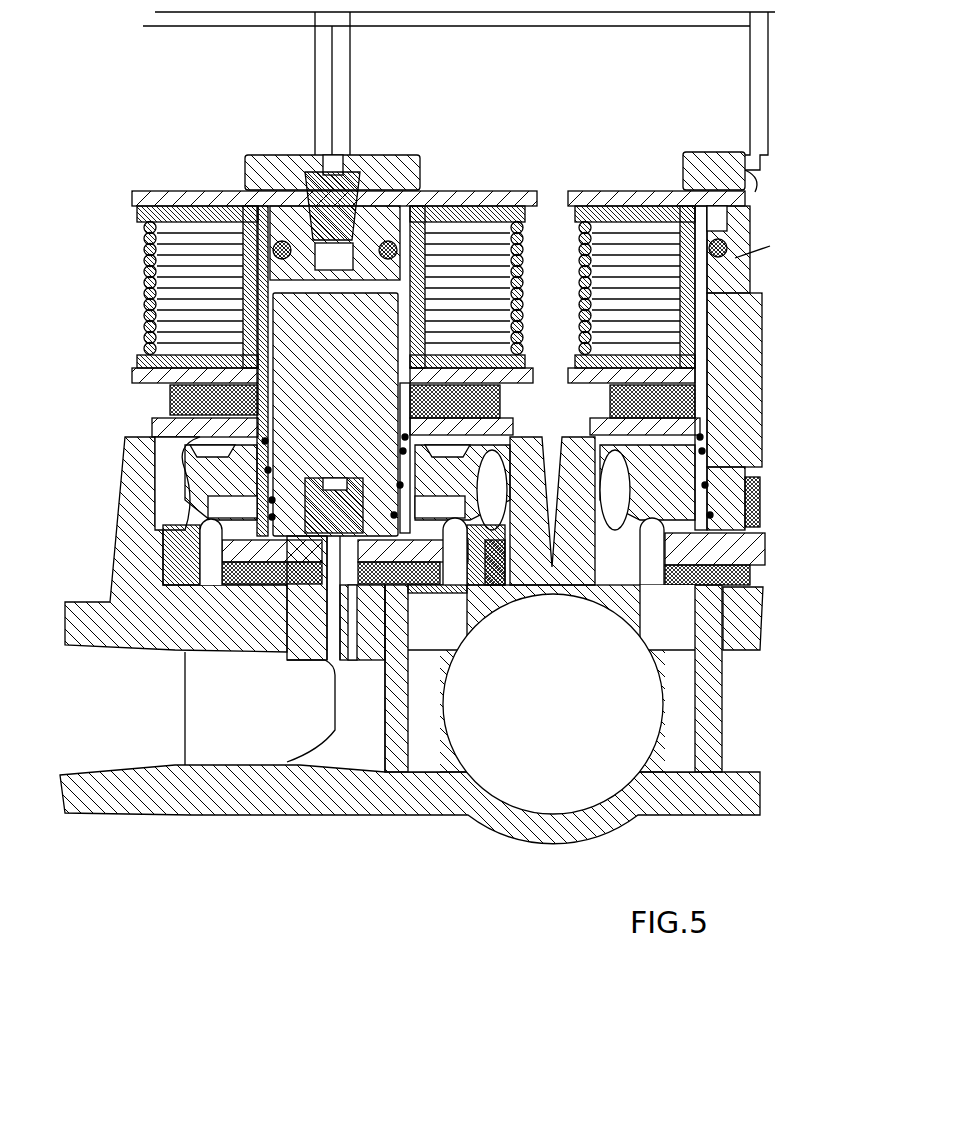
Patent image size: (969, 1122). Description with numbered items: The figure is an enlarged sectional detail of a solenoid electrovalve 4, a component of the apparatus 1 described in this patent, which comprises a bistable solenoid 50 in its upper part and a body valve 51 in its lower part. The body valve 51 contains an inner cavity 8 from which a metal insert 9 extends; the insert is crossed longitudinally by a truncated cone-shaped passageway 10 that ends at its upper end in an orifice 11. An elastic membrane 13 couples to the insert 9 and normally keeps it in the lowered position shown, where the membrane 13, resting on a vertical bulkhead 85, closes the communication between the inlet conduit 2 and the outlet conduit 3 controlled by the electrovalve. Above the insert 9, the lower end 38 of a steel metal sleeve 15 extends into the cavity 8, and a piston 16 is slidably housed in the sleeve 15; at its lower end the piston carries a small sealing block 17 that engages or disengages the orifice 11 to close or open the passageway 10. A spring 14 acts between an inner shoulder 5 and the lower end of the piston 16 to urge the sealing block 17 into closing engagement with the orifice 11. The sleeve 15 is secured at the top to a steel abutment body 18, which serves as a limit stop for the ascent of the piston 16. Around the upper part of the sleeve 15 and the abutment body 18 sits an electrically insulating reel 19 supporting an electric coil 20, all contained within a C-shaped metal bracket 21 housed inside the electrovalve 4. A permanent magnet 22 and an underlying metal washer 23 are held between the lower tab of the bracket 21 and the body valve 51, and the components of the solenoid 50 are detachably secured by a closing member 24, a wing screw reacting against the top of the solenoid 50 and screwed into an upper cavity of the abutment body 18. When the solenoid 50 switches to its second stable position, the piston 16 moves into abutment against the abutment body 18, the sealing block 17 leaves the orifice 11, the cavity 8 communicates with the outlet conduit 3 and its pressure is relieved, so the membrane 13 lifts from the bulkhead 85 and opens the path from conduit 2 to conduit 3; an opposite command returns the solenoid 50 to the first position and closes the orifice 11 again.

The valve 1 is at (774, 543).
The inlet conduit 2 is at (544, 714).
The outlet conduit 3 is at (112, 722).
The electrovalve 4 is at (284, 120).
The inner shoulder 5 is at (160, 488).
The inner cavity 8 is at (260, 580).
The metal insert 9 is at (367, 660).
The truncated cone-shaped passageway 10 is at (337, 653).
The orifice 11 is at (300, 658).
The elastic membrane 13 is at (430, 592).
The spring 14 is at (395, 487).
The metal sleeve 15 is at (425, 303).
The piston 16 is at (335, 414).
The small sealing block 17 is at (345, 476).
The abutment body 18 is at (278, 242).
The electrically insulating reel 19 is at (145, 205).
The electric coil 20 is at (140, 291).
The C-shaped metal bracket 21 is at (465, 190).
The permanent magnet 22 is at (165, 398).
The metal washer 23 is at (150, 426).
The closing member 24 is at (400, 170).
The lower end of the metal sleeve 38 is at (165, 455).
The bistable solenoid 50 is at (108, 214).
The body valve 51 is at (110, 555).
The vertical bulkhead 85 is at (408, 710).